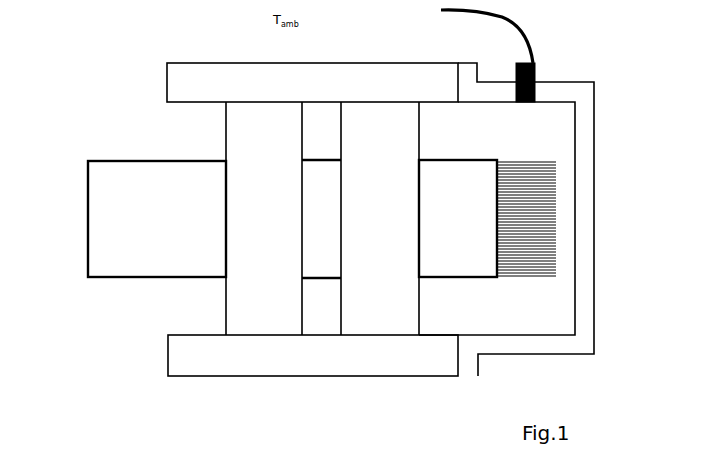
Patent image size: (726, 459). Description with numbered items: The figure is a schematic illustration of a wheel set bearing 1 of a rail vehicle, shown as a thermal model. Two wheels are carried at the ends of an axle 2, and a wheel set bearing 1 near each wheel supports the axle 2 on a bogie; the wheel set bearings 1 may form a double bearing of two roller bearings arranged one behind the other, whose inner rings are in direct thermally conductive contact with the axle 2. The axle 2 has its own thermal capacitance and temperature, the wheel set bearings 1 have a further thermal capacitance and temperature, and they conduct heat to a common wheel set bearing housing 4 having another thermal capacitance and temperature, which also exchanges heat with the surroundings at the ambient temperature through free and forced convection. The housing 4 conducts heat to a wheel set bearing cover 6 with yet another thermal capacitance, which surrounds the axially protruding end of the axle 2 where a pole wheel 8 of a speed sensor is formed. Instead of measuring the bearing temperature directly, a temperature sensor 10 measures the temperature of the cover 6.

The wheel set bearing 1 is at (267, 312).
The axle 2 is at (100, 246).
The wheel set bearing housing 4 is at (187, 66).
The wheel set bearing cover 6 is at (590, 144).
The pole wheel 8 is at (526, 268).
The temperature sensor 10 is at (515, 63).